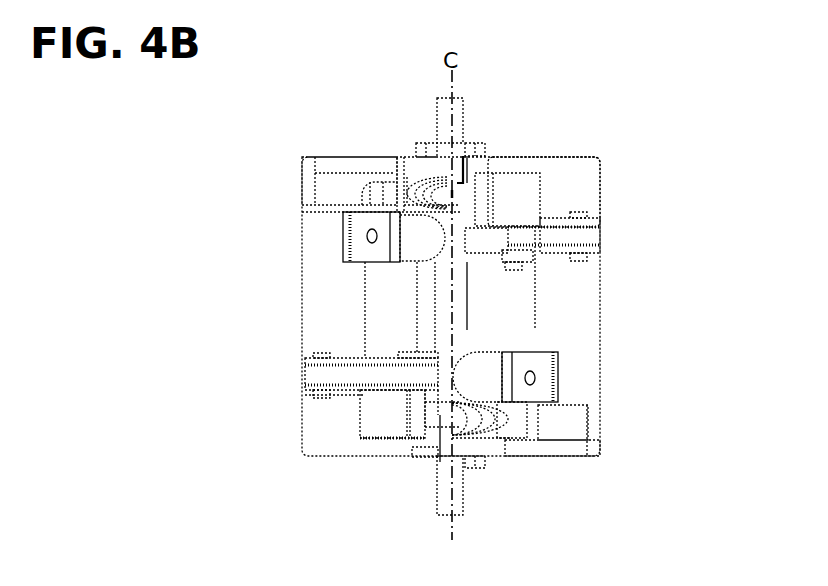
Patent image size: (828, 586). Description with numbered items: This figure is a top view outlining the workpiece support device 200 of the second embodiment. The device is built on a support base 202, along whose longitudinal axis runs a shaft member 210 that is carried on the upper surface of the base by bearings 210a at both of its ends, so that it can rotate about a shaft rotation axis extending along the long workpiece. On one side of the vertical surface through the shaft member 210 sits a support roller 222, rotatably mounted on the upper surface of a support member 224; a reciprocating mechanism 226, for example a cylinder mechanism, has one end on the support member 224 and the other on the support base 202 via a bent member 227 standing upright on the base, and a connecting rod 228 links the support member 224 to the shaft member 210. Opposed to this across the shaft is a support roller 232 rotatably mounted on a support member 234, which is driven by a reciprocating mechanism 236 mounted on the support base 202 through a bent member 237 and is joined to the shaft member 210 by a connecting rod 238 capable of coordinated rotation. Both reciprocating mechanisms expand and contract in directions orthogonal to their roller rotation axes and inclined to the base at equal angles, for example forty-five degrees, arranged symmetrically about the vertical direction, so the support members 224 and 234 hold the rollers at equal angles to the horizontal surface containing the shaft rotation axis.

The workpiece support device 200 is at (586, 116).
The support base 202 is at (582, 315).
The shaft member 210 is at (438, 130).
The bearings 210a is at (424, 150).
The support roller 222 is at (472, 373).
The support member 224 is at (560, 358).
The reciprocating mechanism 226 is at (440, 452).
The bent member 227 is at (560, 453).
The connecting rod 228 is at (350, 395).
The support roller 232 is at (425, 243).
The support member 234 is at (365, 223).
The reciprocating mechanism 236 is at (456, 192).
The bent member 237 is at (334, 165).
The connecting rod 238 is at (555, 218).